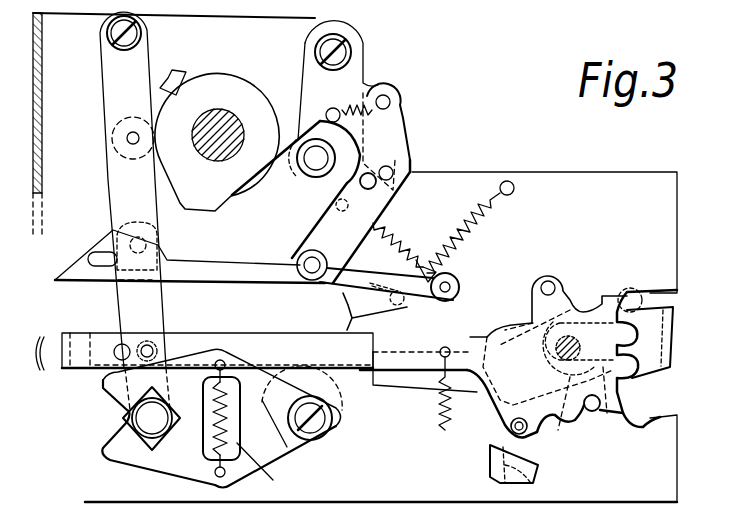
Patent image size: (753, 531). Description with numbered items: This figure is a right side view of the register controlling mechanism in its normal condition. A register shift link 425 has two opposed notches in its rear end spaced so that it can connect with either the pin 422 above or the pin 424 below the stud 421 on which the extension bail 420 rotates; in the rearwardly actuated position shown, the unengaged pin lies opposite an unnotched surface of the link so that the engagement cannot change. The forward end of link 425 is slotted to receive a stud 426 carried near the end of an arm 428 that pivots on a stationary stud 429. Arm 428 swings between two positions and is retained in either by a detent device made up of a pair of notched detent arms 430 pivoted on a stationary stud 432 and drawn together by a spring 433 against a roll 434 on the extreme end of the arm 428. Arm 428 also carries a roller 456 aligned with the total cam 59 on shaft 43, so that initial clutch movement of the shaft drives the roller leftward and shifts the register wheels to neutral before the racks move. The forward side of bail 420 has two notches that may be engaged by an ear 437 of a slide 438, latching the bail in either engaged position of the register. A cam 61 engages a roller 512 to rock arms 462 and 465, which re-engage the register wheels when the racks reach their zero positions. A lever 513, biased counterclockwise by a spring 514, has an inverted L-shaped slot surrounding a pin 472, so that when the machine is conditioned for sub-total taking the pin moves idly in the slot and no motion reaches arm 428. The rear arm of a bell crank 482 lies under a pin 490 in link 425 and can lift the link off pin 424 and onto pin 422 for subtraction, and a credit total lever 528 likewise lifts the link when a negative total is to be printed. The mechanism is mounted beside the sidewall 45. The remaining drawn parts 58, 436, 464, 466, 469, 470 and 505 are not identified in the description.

The shaft 43 is at (215, 110).
The sidewall 45 is at (672, 490).
The cam 58 is at (205, 78).
The total cam 59 is at (172, 70).
The cam 61 is at (238, 200).
The extension bail 420 is at (660, 372).
The stud 421 is at (582, 420).
The pin 422 is at (552, 283).
The pin 424 is at (596, 411).
The link 425 is at (452, 336).
The stud 426 is at (152, 340).
The arm 428 is at (100, 58).
The stationary stud 429 is at (108, 22).
The notched detent arms 430 is at (262, 400).
The stationary stud 432 is at (320, 428).
The spring 433 is at (262, 470).
The roll 434 is at (138, 418).
The spring 436 is at (441, 435).
The ear 437 is at (520, 330).
The slide 438 is at (418, 388).
The roller 456 is at (116, 127).
The arm 462 is at (300, 105).
The pivot screw 464 is at (345, 52).
The arm 465 is at (412, 168).
The spring 466 is at (392, 118).
The link rod 469 is at (447, 293).
The spring 470 is at (416, 256).
The pin 472 is at (160, 253).
The bell crank 482 is at (528, 478).
The pin 490 is at (510, 426).
The link 505 is at (342, 293).
The roller 512 is at (292, 160).
The lever 513 is at (344, 326).
The spring 514 is at (492, 213).
The credit total lever 528 is at (488, 468).